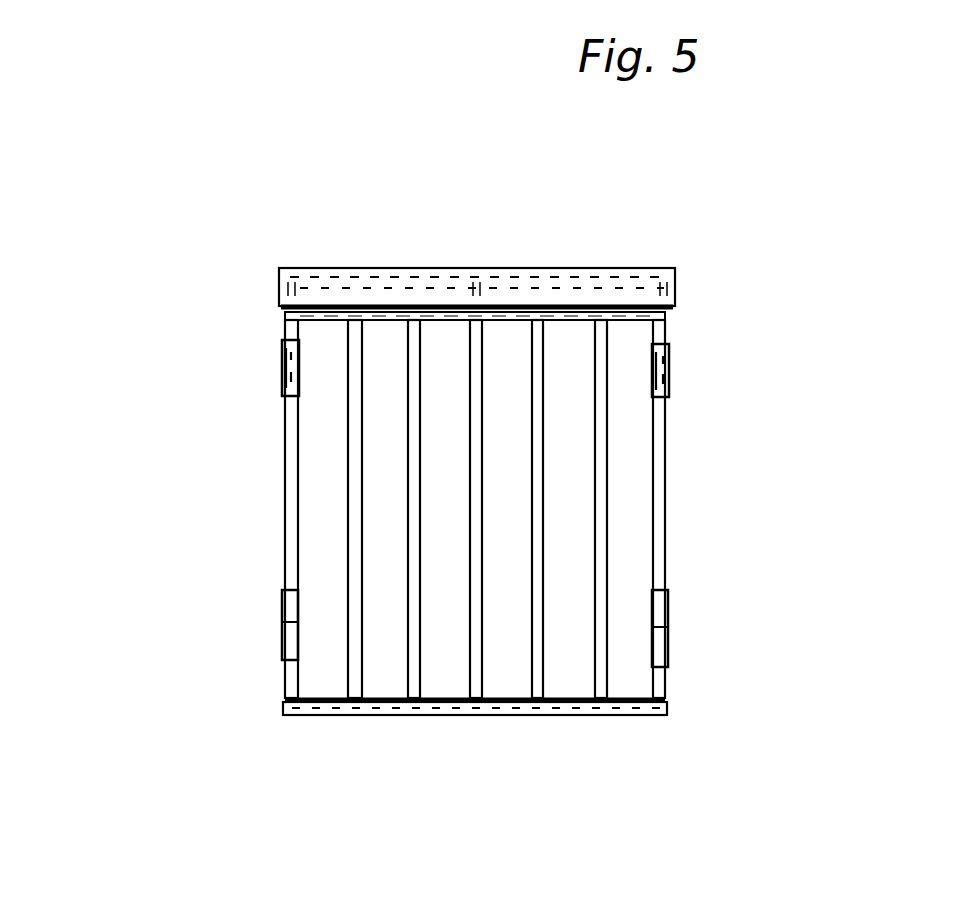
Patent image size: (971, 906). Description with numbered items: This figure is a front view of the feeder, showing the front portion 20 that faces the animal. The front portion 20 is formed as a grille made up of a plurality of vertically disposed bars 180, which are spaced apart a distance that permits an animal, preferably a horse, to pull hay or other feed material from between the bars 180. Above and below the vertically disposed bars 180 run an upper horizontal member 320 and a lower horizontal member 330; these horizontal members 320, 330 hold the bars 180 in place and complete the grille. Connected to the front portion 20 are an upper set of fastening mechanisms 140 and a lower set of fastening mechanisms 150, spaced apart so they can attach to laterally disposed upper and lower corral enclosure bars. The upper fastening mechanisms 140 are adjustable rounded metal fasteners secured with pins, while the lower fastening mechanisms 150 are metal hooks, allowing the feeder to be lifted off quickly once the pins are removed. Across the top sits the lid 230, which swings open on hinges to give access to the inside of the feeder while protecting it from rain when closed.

The front portion 20 is at (873, 267).
The upper set of fastening mechanisms 140 is at (283, 362).
The lower set of fastening mechanisms 150 is at (282, 620).
The vertically disposed bars 180 is at (472, 660).
The lid 230 is at (316, 288).
The upper horizontal member 320 is at (633, 320).
The lower horizontal member 330 is at (525, 715).